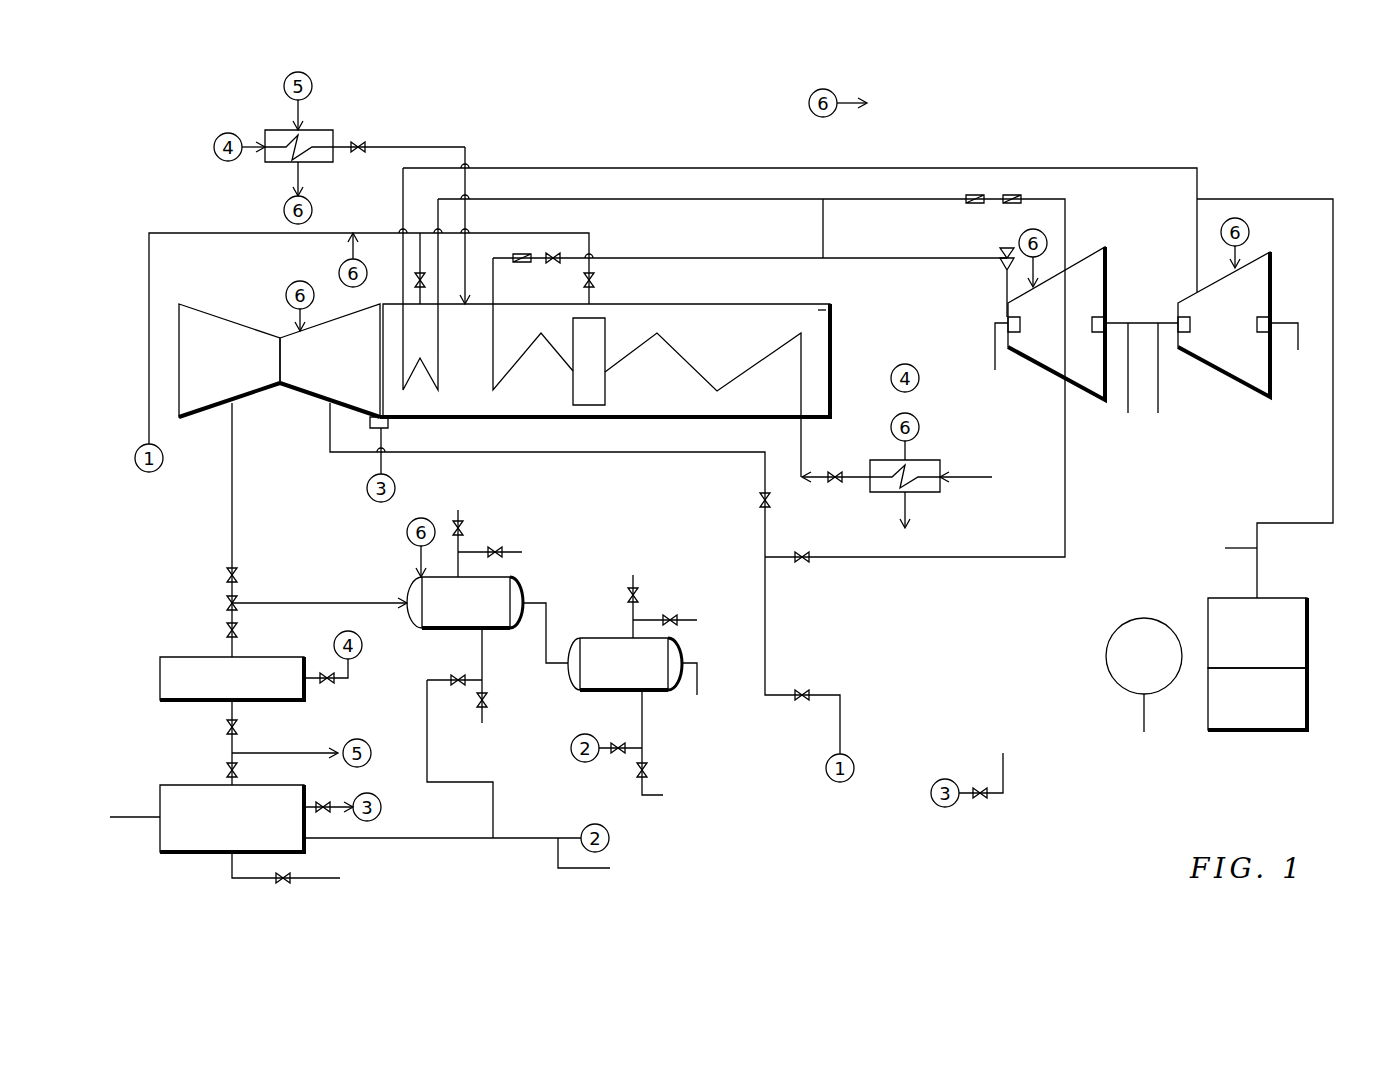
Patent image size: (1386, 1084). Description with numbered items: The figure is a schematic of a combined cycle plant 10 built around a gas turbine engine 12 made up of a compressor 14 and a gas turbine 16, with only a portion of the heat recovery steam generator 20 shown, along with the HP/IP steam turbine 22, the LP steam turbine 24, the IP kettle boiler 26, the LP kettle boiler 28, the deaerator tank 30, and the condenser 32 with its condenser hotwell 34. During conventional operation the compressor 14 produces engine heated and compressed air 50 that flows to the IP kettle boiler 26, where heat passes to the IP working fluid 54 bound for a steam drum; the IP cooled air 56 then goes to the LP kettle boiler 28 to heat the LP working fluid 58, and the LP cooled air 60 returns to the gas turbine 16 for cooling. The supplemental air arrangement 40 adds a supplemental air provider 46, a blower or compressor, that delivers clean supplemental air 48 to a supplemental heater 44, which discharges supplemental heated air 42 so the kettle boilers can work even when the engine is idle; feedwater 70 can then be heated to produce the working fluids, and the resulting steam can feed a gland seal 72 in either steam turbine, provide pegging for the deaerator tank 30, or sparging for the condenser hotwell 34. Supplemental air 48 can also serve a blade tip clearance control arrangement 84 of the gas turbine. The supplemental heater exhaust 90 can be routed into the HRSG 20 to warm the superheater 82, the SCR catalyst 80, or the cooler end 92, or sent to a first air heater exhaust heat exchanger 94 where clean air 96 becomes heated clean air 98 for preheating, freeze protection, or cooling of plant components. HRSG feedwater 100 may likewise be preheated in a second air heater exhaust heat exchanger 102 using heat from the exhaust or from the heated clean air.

The combined cycle plant 10 is at (1213, 115).
The gas turbine engine 12 is at (231, 296).
The compressor 14 is at (218, 351).
The gas turbine 16 is at (371, 351).
The heat recovery steam generator 20 is at (698, 304).
The HP/IP steam turbine 22 is at (1108, 273).
The LP steam turbine 24 is at (1273, 275).
The IP kettle boiler 26 is at (462, 630).
The LP kettle boiler 28 is at (655, 692).
The deaerator tank 30 is at (1133, 622).
The condenser 32 is at (1310, 618).
The condenser hotwell 34 is at (1310, 705).
The supplemental air arrangement 40 is at (171, 607).
The supplemental heated air 42 is at (228, 650).
The supplemental heater 44 is at (192, 703).
The supplemental air provider 46 is at (192, 853).
The supplemental air 48 is at (228, 742).
The engine heated and compressed air 50 is at (233, 489).
The IP working fluid 54 is at (468, 541).
The IP cooled air 56 is at (557, 683).
The LP working fluid 58 is at (640, 611).
The LP cooled air 60 is at (717, 698).
The feedwater 70 is at (145, 817).
The gland seal 72 is at (1011, 317).
The SCR catalyst 80 is at (607, 390).
The superheater 82 is at (440, 360).
The blade tip clearance control arrangement 84 is at (390, 428).
The supplemental heater exhaust 90 is at (352, 671).
The cooler end 92 is at (785, 304).
The first air heater exhaust heat exchanger 94 is at (320, 162).
The clean air 96 is at (297, 108).
The heated clean air 98 is at (297, 178).
The HRSG feedwater 100 is at (965, 477).
The second air heater exhaust heat exchanger 102 is at (925, 492).